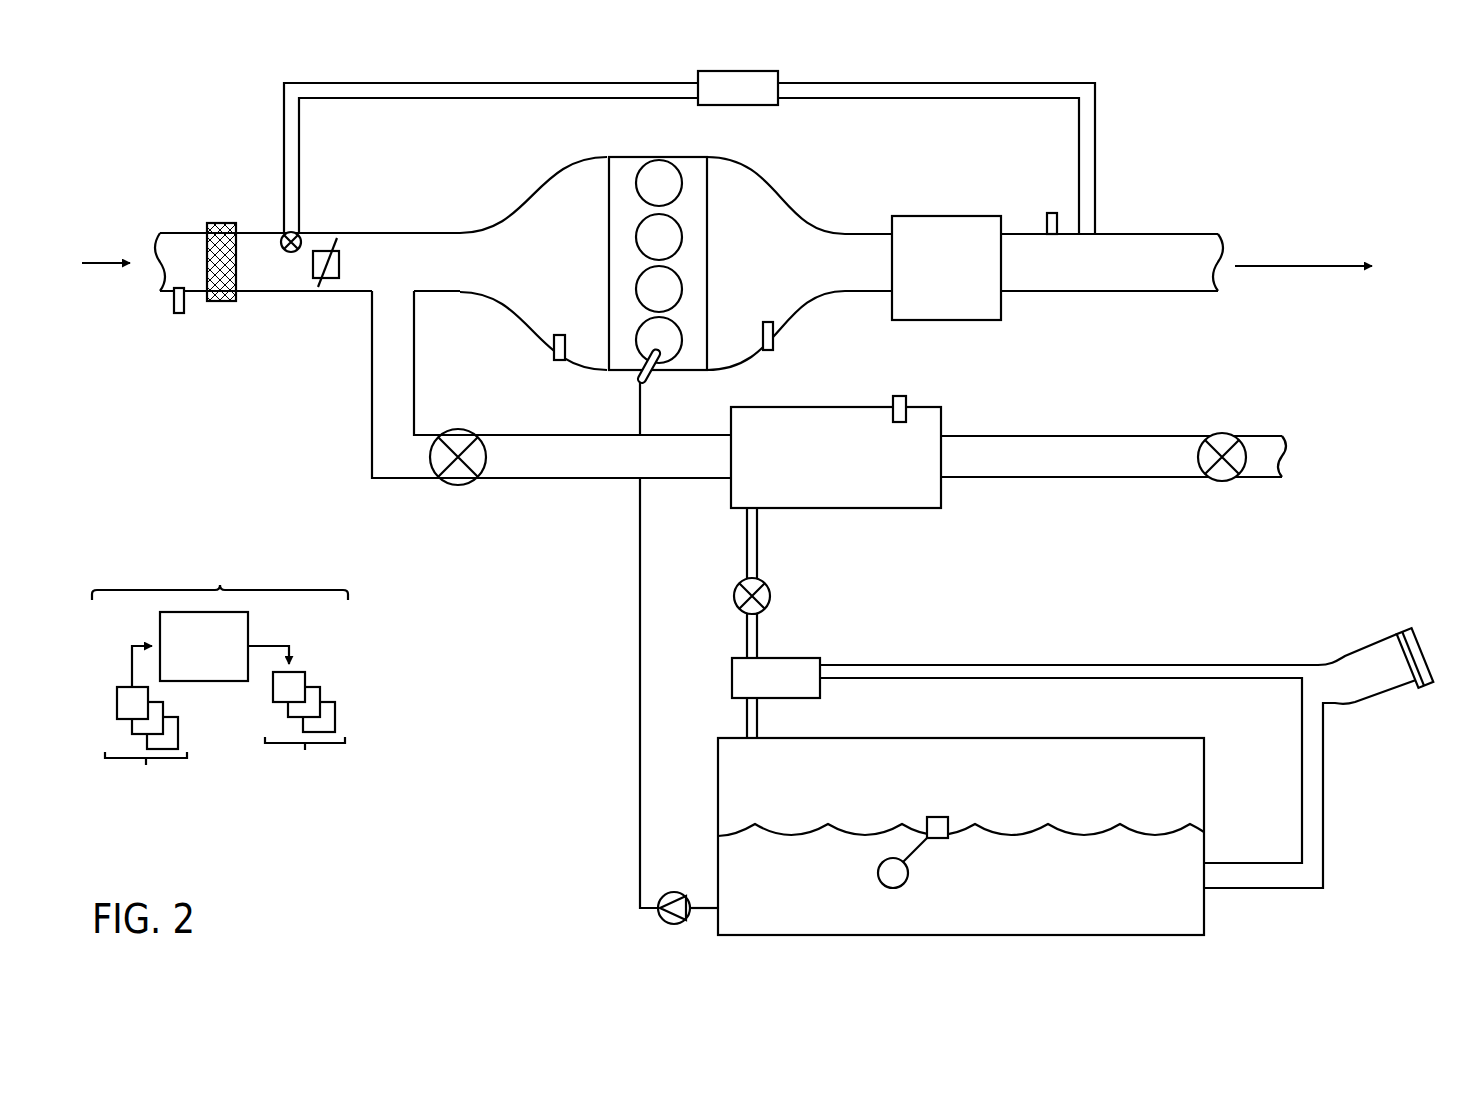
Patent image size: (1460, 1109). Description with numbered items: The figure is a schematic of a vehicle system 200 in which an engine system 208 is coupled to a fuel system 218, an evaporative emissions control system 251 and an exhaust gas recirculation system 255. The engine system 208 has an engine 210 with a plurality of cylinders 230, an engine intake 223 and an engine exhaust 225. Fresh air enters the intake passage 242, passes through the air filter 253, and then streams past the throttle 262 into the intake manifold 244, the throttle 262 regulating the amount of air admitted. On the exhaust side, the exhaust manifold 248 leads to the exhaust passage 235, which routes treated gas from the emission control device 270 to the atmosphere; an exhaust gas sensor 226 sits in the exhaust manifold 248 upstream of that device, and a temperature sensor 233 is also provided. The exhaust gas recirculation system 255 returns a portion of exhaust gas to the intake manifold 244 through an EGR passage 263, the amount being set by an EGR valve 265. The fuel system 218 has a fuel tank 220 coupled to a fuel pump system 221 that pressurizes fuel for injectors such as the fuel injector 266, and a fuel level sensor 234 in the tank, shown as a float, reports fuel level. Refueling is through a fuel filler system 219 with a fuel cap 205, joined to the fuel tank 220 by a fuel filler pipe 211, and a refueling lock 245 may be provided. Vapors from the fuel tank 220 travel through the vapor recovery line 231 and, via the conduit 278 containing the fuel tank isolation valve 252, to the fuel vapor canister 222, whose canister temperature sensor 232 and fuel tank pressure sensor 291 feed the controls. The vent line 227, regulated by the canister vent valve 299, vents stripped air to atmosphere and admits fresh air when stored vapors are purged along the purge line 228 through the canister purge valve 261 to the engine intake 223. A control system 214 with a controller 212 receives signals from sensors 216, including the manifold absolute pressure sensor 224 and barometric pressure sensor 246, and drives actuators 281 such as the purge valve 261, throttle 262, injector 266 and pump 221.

The vehicle system 200 is at (1382, 132).
The fuel cap 205 is at (1407, 627).
The engine system 208 is at (1270, 178).
The engine 210 is at (707, 289).
The fuel filler pipe 211 is at (1325, 780).
The controller 212 is at (204, 646).
The control system 214 is at (219, 586).
The sensors 216 is at (146, 731).
The fuel system 218 is at (1345, 888).
The fuel filler system 219 is at (1379, 622).
The fuel tank 220 is at (1205, 797).
The fuel pump system 221 is at (668, 892).
The fuel vapor canister 222 is at (897, 508).
The engine intake 223 is at (472, 202).
The manifold absolute pressure sensor 224 is at (554, 339).
The engine exhaust 225 is at (860, 218).
The exhaust gas sensor 226 is at (773, 330).
The vent line 227 is at (1113, 456).
The purge line 228 is at (551, 384).
The cylinders 230 is at (682, 181).
The vapor recovery line 231 is at (1222, 665).
The canister temperature sensor 232 is at (898, 396).
The temperature sensor 233 is at (1047, 226).
The fuel level sensor 234 is at (937, 817).
The exhaust passage 235 is at (1170, 234).
The intake passage 242 is at (288, 293).
The intake manifold 244 is at (533, 263).
The refueling lock 245 is at (1411, 686).
The barometric pressure sensor 246 is at (178, 313).
The exhaust manifold 248 is at (799, 263).
The evaporative emissions control system 251 is at (1234, 400).
The fuel tank isolation valve 252 is at (734, 592).
The air filter 253 is at (215, 222).
The exhaust gas recirculation system 255 is at (1110, 113).
The canister purge valve 261 is at (740, 105).
The throttle 262 is at (339, 269).
The EGR passage 263 is at (470, 98).
The EGR valve 265 is at (298, 237).
The fuel injector 266 is at (655, 372).
The emission control device 270 is at (933, 216).
The conduit 278 is at (758, 560).
The actuators 281 is at (299, 722).
The fuel tank pressure sensor 291 is at (794, 658).
The canister vent valve 299 is at (1216, 479).